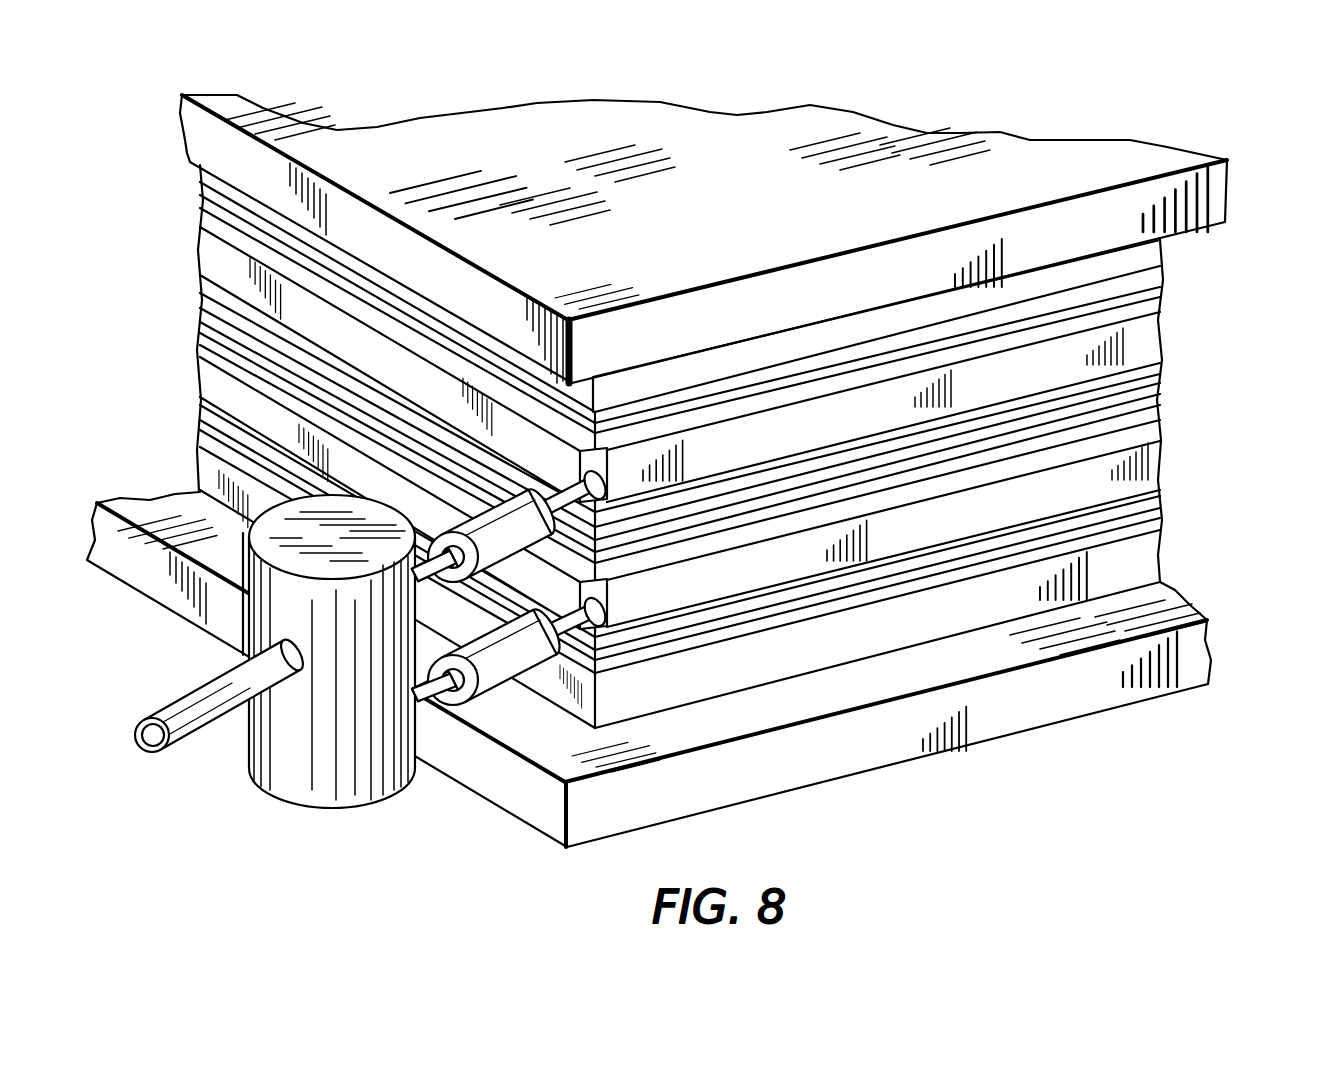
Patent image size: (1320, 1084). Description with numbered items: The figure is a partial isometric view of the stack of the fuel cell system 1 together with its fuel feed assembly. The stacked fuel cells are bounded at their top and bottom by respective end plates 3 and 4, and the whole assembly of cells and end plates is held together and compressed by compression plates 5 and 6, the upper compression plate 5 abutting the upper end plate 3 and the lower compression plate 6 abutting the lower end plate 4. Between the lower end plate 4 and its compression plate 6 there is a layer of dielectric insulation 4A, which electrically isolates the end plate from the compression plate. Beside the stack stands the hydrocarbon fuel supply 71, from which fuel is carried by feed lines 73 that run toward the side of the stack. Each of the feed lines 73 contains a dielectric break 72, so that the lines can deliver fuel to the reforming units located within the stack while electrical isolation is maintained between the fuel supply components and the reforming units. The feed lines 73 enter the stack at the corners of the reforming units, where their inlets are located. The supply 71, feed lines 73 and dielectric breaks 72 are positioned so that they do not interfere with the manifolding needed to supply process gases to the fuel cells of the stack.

The fuel cell system 1 is at (1234, 228).
The end plate 3 is at (1152, 253).
The end plate 4 is at (1143, 552).
The dielectric insulation 4A is at (1147, 591).
The compression plate 5 is at (1217, 181).
The compression plate 6 is at (1195, 654).
The supply 71 is at (370, 776).
The dielectric breaks 72 is at (497, 523).
The feed lines 73 is at (438, 620).